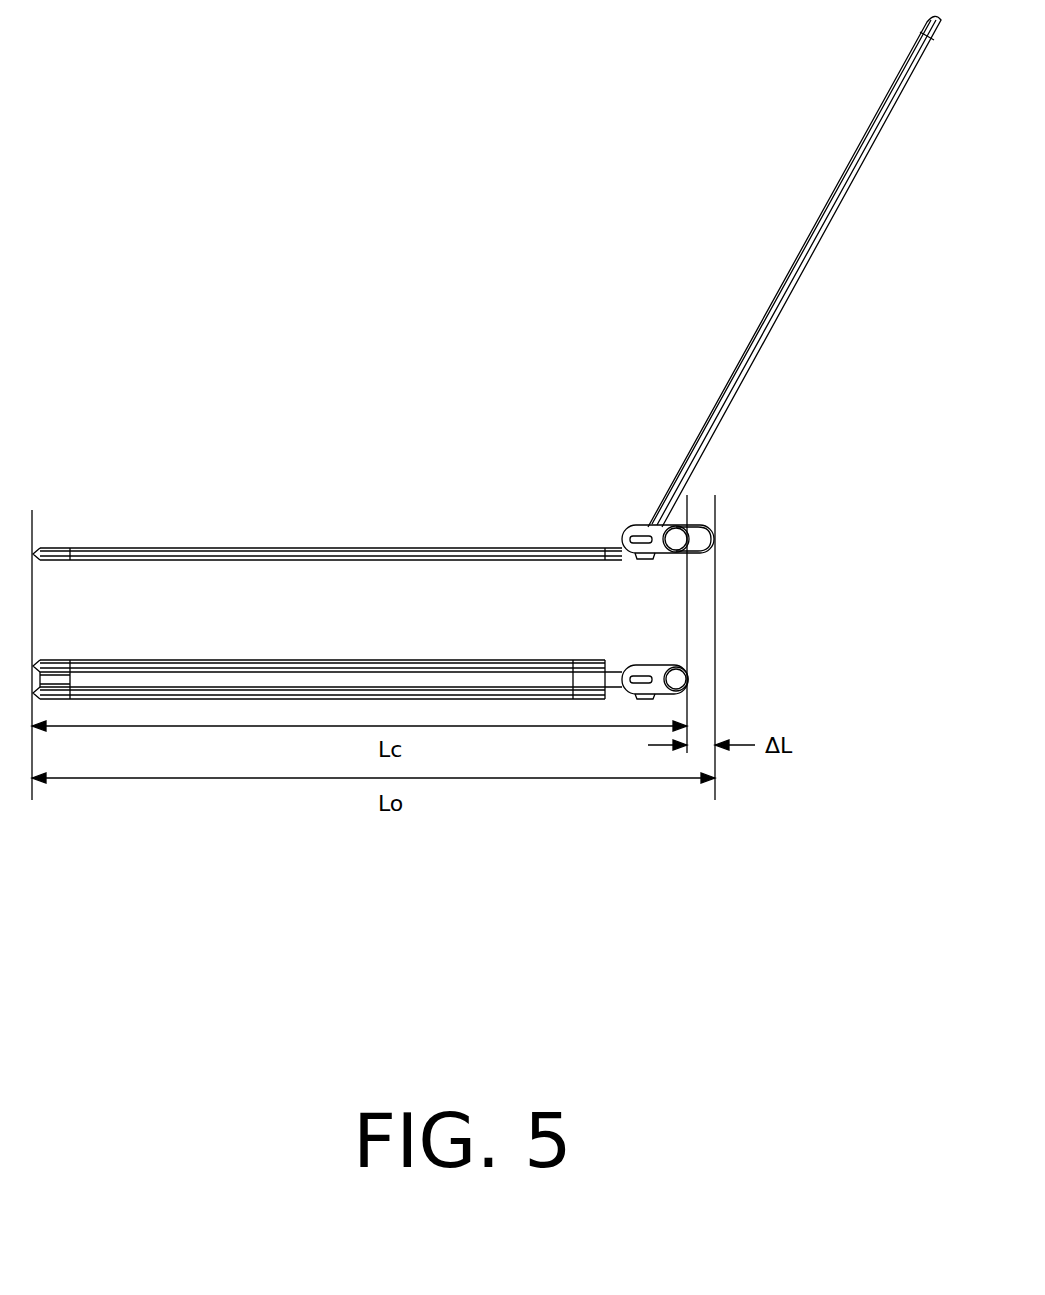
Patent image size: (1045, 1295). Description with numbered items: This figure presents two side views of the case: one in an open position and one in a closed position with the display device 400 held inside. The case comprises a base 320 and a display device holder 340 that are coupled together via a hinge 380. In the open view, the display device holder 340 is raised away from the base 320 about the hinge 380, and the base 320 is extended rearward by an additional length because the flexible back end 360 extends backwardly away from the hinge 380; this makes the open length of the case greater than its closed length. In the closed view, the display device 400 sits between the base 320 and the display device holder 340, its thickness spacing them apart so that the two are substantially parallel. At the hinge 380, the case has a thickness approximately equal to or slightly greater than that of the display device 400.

The base 320 is at (465, 548).
The display device holder 340 is at (718, 422).
The flexible back end 360 is at (714, 539).
The hinge 380 is at (646, 528).
The display device 400 is at (274, 678).